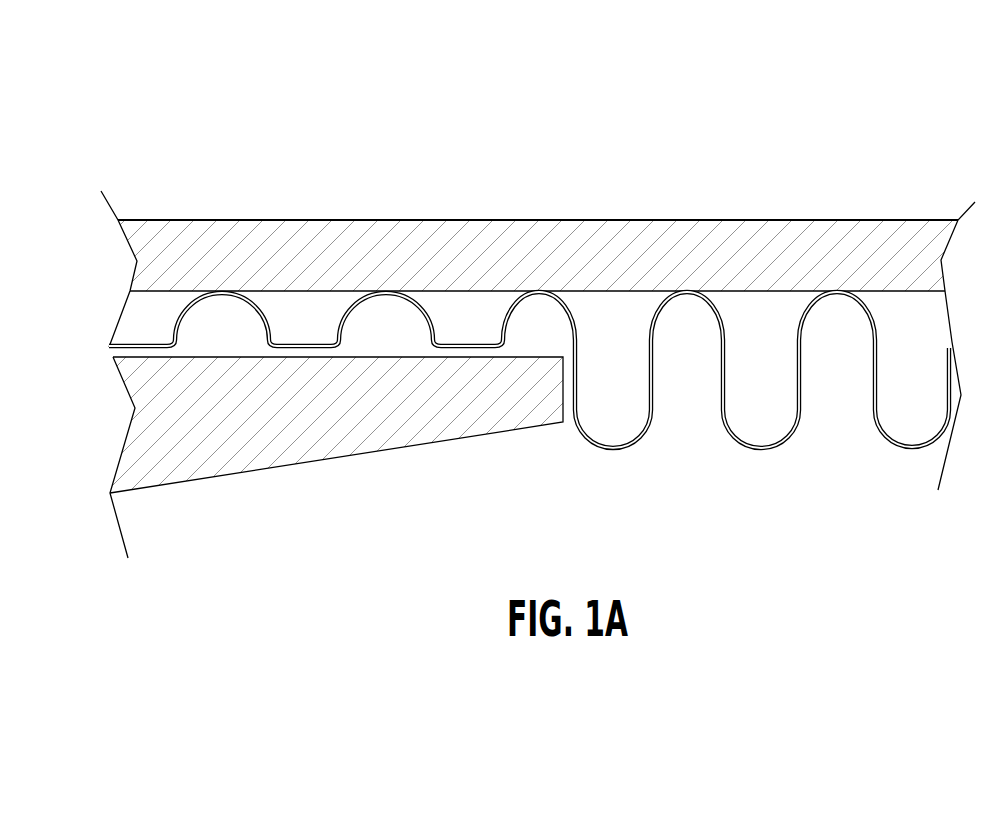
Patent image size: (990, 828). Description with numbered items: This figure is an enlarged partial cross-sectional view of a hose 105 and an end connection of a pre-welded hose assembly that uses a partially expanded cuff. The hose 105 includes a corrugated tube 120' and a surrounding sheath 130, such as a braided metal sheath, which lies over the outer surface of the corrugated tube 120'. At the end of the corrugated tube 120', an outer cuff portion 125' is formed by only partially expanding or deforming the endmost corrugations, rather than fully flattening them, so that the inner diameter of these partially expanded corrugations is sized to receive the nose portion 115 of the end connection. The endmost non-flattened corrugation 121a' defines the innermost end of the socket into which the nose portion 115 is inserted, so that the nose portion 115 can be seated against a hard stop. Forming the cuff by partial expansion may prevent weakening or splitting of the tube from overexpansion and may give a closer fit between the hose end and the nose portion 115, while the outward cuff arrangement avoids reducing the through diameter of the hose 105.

The hose 105 is at (820, 160).
The nose portion 115 is at (317, 438).
The corrugated tube 120' is at (529, 435).
The endmost non-flattened corrugation 121a' is at (620, 464).
The outer cuff portion 125' is at (463, 249).
The sheath 130 is at (622, 240).